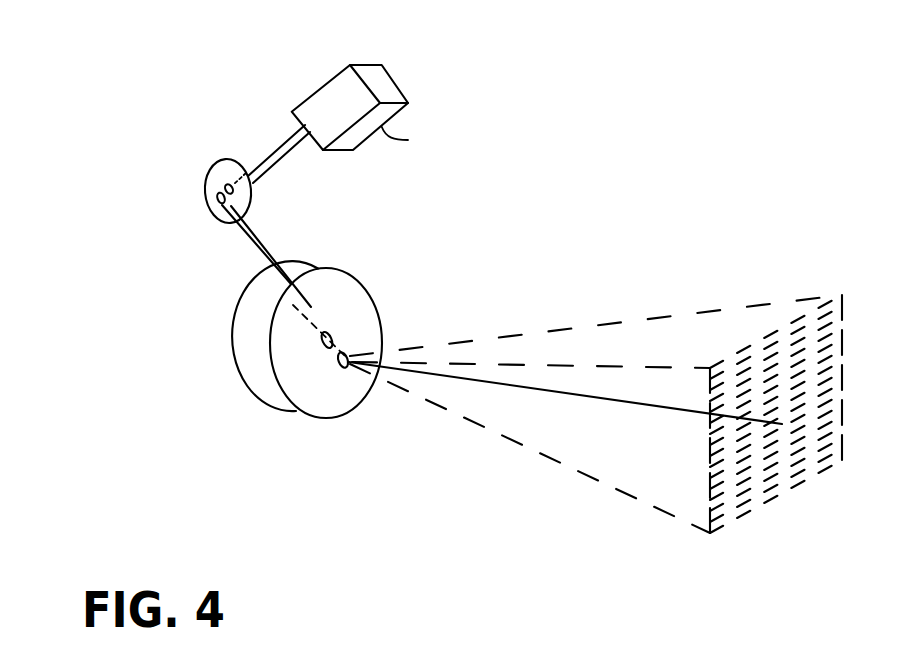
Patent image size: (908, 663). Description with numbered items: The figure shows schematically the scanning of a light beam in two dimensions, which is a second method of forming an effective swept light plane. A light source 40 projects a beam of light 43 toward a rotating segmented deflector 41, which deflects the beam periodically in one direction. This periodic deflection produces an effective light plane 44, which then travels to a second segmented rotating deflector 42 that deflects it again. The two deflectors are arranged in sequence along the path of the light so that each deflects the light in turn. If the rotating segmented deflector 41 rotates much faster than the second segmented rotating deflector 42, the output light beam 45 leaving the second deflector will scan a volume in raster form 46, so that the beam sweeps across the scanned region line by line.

The light source 40 is at (358, 65).
The rotating segmented deflector 41 is at (205, 188).
The second segmented rotating deflector 42 is at (267, 343).
The beam of light 43 is at (275, 143).
The effective light plane 44 is at (255, 260).
The output light beam 45 is at (567, 396).
The raster form 46 is at (825, 323).